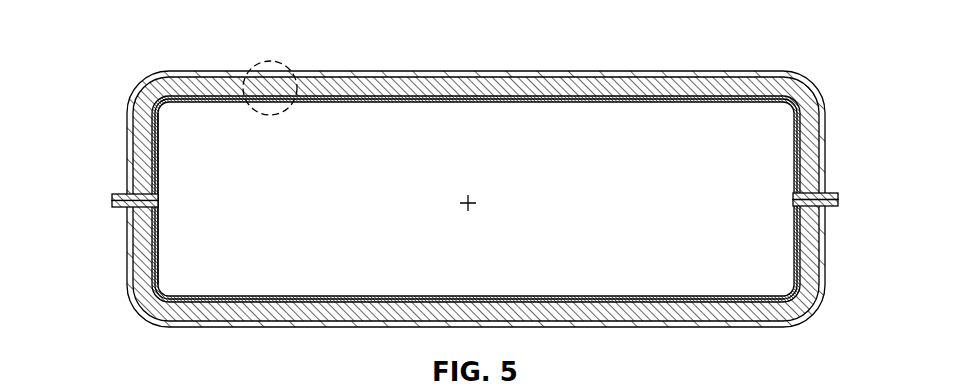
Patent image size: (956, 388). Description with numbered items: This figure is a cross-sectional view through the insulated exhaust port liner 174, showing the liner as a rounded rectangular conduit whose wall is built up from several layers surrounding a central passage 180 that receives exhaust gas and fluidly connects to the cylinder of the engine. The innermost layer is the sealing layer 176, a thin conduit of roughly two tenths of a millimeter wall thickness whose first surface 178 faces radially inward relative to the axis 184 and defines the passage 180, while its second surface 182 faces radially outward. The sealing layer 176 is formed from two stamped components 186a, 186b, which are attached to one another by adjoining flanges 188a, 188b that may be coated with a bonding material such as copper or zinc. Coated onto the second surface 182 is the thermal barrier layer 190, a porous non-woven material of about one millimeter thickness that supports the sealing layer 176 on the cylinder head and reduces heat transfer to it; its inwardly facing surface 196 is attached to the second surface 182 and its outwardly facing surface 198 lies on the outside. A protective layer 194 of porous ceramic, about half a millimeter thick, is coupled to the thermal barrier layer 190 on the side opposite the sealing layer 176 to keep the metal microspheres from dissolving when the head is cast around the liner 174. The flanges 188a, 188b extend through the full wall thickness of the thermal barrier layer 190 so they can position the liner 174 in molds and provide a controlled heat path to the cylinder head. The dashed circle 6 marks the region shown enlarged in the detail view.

The detail region of FIG. 6 is at (268, 61).
The insulated exhaust port liner 174 is at (183, 78).
The sealing layer 176 is at (408, 103).
The first surface 178 is at (442, 100).
The passage 180 is at (412, 249).
The second surface 182 is at (443, 90).
The axis 184 is at (468, 212).
The first stamped component 186a is at (158, 180).
The second stamped component 186b is at (158, 242).
The first flange 188a is at (127, 194).
The second flange 188b is at (127, 208).
The thermal barrier layer 190 is at (672, 90).
The protective layer 194 is at (743, 71).
The inwardly facing surface 196 is at (528, 99).
The outwardly facing surface 198 is at (680, 74).